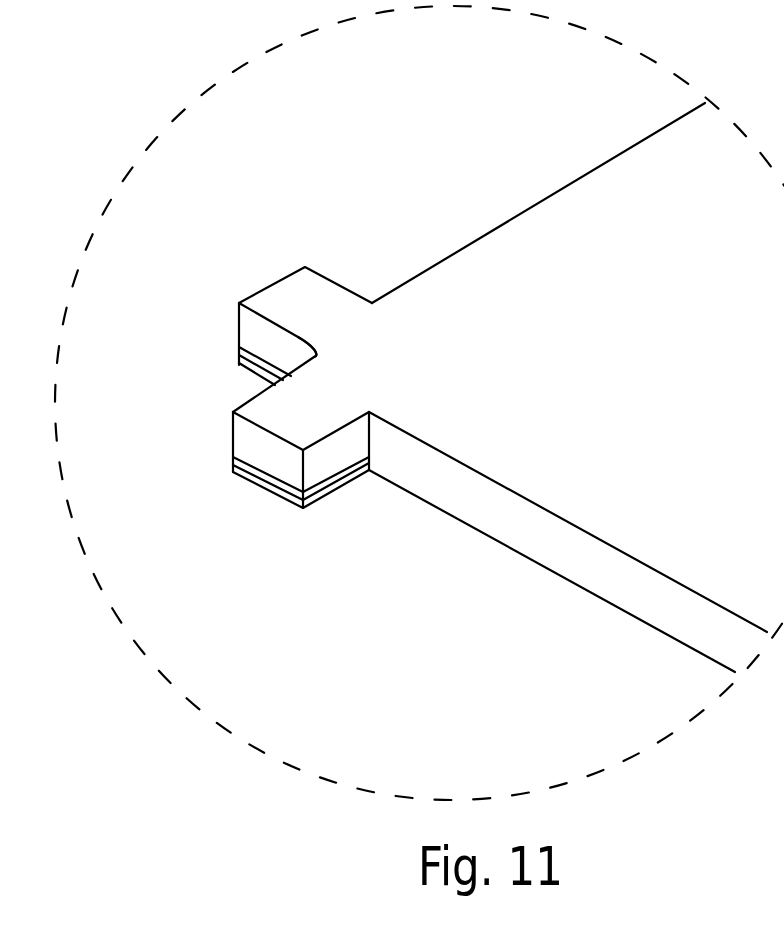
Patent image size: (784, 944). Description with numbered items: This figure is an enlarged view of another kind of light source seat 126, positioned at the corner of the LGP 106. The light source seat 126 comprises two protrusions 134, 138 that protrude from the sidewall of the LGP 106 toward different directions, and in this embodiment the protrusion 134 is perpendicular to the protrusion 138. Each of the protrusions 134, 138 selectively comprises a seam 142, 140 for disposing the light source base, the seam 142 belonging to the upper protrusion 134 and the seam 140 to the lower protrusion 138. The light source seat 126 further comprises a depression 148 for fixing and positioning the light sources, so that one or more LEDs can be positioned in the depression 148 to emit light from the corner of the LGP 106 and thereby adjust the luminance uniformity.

The LGP 106 is at (563, 353).
The light source seat 126 is at (357, 253).
The protrusion 134 is at (283, 296).
The protrusion 138 is at (275, 418).
The seam 140 is at (340, 482).
The seam 142 is at (258, 373).
The depression 148 is at (318, 350).